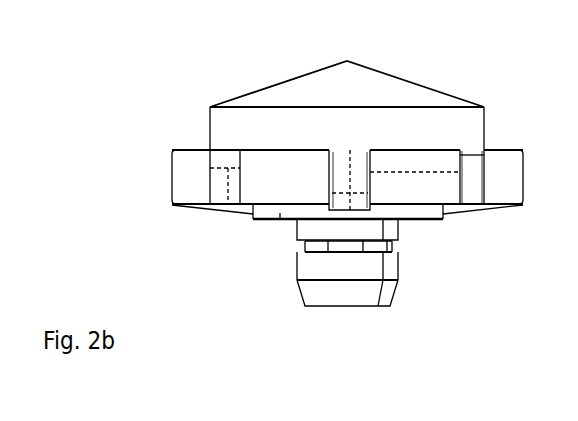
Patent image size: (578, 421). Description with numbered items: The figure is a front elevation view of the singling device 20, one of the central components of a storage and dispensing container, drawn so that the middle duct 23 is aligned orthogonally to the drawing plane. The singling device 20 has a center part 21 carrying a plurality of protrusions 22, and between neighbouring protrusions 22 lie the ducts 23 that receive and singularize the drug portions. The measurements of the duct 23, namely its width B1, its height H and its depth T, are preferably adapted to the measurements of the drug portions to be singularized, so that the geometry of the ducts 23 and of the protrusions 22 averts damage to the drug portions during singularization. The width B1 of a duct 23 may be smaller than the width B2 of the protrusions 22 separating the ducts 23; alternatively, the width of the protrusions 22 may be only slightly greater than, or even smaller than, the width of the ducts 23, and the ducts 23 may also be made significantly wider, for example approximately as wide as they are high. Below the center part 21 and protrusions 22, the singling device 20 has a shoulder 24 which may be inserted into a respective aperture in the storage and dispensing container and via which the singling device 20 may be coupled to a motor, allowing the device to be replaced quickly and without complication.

The singling device 20 is at (422, 76).
The center part 21 is at (313, 80).
The protrusions 22 is at (190, 179).
The ducts 23 is at (470, 190).
The shoulder 24 is at (328, 293).
The width of the duct B1 is at (340, 192).
The width of the protrusions B2 is at (400, 172).
The height of the duct H is at (351, 173).
The depth of the duct T is at (228, 172).